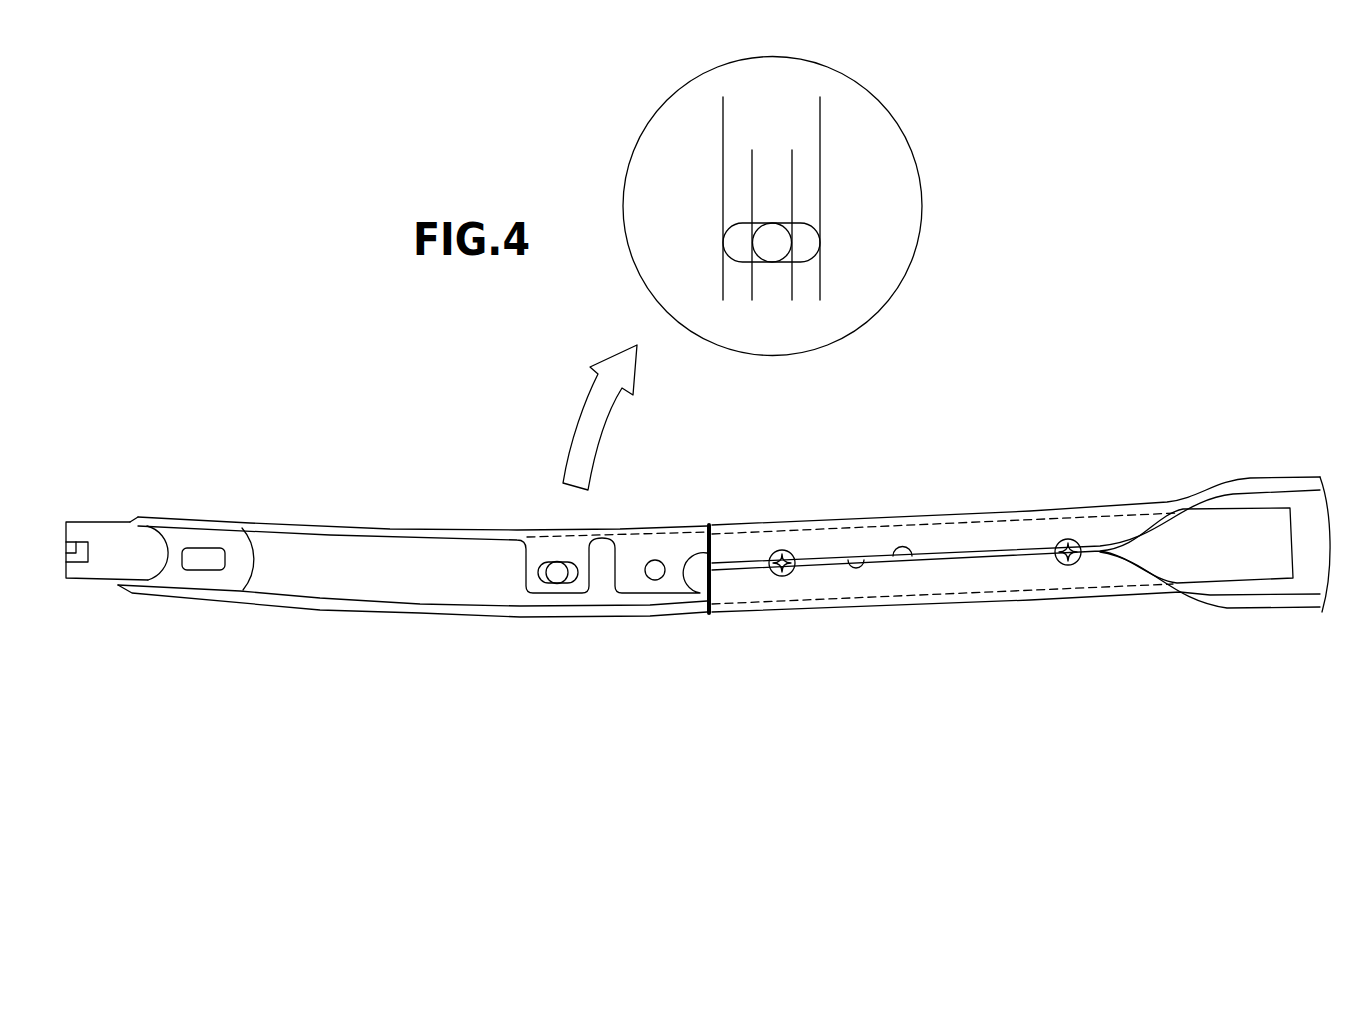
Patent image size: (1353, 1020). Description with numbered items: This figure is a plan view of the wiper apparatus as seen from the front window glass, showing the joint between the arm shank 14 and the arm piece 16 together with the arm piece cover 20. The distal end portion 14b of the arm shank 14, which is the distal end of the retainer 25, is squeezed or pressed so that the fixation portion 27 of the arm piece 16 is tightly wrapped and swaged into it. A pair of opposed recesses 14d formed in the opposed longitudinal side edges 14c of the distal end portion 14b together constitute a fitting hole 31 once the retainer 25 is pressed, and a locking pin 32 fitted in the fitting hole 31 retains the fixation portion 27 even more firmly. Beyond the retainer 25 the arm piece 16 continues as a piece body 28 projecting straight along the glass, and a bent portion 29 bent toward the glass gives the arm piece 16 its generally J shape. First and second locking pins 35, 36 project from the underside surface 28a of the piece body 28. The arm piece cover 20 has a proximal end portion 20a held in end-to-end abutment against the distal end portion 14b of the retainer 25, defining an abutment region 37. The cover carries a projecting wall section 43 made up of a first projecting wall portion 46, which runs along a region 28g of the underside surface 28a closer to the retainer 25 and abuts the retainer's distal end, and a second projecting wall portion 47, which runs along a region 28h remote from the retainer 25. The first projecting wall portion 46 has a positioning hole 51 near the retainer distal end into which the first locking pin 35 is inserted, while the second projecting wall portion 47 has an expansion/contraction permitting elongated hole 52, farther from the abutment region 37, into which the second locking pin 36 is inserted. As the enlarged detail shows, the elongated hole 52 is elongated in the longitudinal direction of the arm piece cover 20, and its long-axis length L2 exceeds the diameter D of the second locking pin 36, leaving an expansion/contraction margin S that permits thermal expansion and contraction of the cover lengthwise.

The arm shank 14 is at (1021, 507).
The distal end portion 14b is at (937, 536).
The longitudinal side edges 14c is at (858, 558).
The recesses 14d is at (782, 550).
The arm piece 16 is at (471, 624).
The arm piece cover 20 is at (383, 524).
The proximal end portion 20a is at (699, 545).
The retainer 25 is at (1140, 503).
The fixation portion 27 is at (973, 582).
The piece body 28 is at (320, 600).
The underside surface 28a is at (390, 582).
The region closer to the retainer 28g is at (655, 604).
The region remote from the retainer 28h is at (548, 604).
The bent portion 29 is at (175, 573).
The fitting hole 31 is at (1016, 547).
The locking pin 32 is at (927, 547).
The first locking pin 35 is at (647, 501).
The second locking pin 36 is at (559, 565).
The abutment region 37 is at (690, 615).
The projecting wall section 43 is at (664, 507).
The first projecting wall portion 46 is at (639, 600).
The second projecting wall portion 47 is at (664, 482).
The positioning hole 51 is at (651, 563).
The expansion/contraction permitting elongated hole 52 is at (541, 563).
The length of the long axis L2 is at (820, 102).
The diameter D is at (752, 155).
The expansion/contraction margin S is at (708, 292).